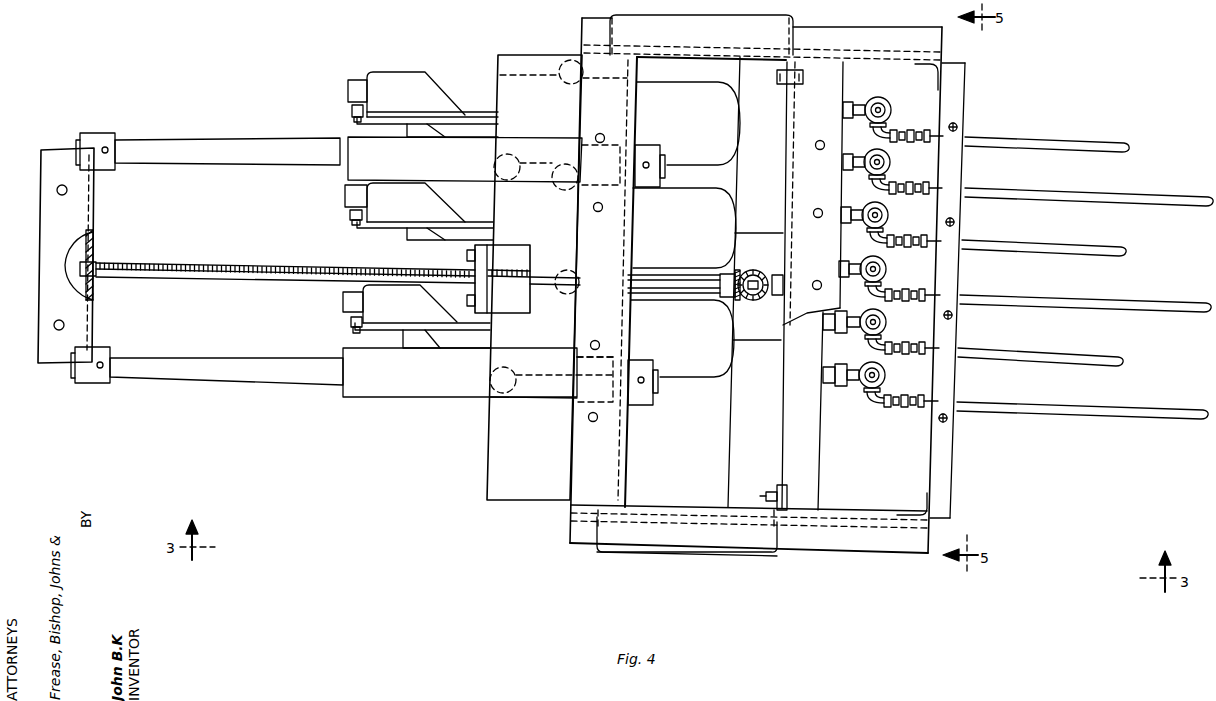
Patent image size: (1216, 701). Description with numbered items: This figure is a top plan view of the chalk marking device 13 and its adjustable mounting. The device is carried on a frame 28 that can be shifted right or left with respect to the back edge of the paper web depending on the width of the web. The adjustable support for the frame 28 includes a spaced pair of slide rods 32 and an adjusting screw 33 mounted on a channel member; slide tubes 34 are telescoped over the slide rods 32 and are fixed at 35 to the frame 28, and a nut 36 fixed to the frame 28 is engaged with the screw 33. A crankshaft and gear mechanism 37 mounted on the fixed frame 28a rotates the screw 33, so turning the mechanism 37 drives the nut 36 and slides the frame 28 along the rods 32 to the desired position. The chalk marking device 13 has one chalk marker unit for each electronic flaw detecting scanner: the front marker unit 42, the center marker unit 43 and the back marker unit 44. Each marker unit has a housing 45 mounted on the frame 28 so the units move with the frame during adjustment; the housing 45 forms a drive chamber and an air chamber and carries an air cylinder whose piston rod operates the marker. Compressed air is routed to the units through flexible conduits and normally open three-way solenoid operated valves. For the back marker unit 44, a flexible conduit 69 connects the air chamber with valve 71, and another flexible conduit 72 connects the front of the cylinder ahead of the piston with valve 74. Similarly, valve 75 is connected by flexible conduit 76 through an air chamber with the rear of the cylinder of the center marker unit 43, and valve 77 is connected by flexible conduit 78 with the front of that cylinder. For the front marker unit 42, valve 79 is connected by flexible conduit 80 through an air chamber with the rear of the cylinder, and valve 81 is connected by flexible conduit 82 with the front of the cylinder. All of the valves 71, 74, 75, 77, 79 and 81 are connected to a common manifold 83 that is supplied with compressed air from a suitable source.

The chalk marking device 13 is at (541, 527).
The frame 28 is at (498, 433).
The fixed frame 28a is at (867, 542).
The slide rods 32 is at (193, 148).
The adjusting screw 33 is at (185, 263).
The slide tubes 34 is at (340, 140).
The fixed connection 35 is at (543, 400).
The nut 36 is at (488, 300).
The crankshaft and gear mechanism 37 is at (750, 270).
The front marker unit 42 is at (437, 86).
The center marker unit 43 is at (342, 216).
The back marker unit 44 is at (335, 318).
The housing 45 is at (680, 88).
The flexible conduit 69 is at (1148, 421).
The three-way solenoid operated valve 71 is at (886, 376).
The flexible conduit 72 is at (1090, 365).
The three-way solenoid operated valve 74 is at (887, 322).
The valve 75 is at (887, 269).
The flexible conduit 76 is at (1143, 310).
The valve 77 is at (889, 215).
The flexible conduit 78 is at (1097, 254).
The valve 79 is at (891, 162).
The flexible conduit 80 is at (1150, 204).
The valve 81 is at (892, 110).
The flexible conduit 82 is at (1118, 150).
The common manifold 83 is at (820, 483).